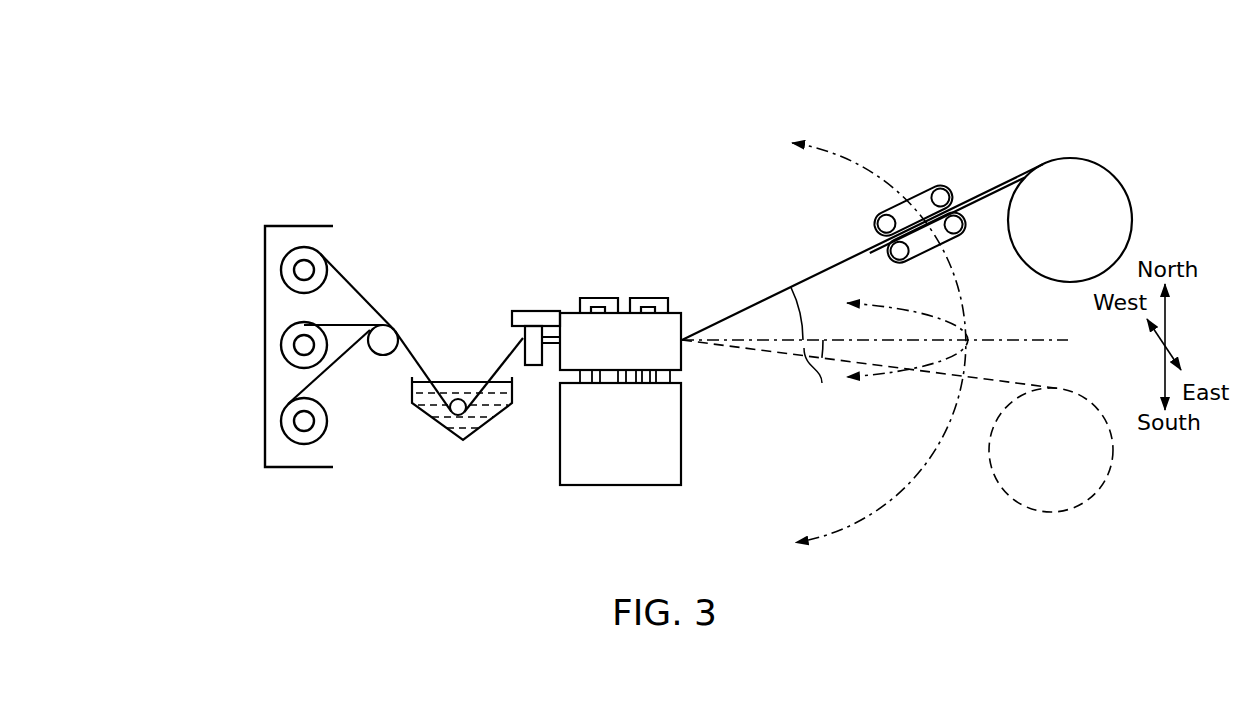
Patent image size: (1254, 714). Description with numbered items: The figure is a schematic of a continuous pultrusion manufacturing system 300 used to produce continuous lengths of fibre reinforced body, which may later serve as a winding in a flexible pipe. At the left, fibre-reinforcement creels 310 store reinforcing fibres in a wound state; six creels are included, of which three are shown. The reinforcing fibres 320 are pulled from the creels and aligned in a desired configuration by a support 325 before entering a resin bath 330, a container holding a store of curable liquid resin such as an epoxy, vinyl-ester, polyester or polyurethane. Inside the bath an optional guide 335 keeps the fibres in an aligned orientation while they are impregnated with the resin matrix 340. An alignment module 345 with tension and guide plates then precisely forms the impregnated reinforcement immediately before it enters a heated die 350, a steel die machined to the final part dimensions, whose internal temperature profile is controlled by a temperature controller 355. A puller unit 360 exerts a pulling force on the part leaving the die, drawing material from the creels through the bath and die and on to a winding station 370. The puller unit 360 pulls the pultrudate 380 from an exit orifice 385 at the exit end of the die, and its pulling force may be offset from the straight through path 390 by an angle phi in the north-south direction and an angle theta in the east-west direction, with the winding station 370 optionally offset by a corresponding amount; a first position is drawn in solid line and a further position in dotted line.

The manufacturing system 300 is at (624, 91).
The fibre-reinforcement creels 310 is at (280, 427).
The reinforcing fibres 320 is at (355, 283).
The support 325 is at (381, 348).
The resin bath 330 is at (477, 431).
The guide 335 is at (457, 399).
The resin matrix 340 is at (458, 428).
The alignment module 345 is at (529, 312).
The heated die 350 is at (591, 354).
The temperature controller 355 is at (591, 444).
The puller unit 360 is at (928, 192).
The winding station 370 is at (1104, 188).
The pultrudate 380 is at (822, 271).
The exit orifice 385 is at (706, 362).
The straight through path 390 is at (1010, 339).